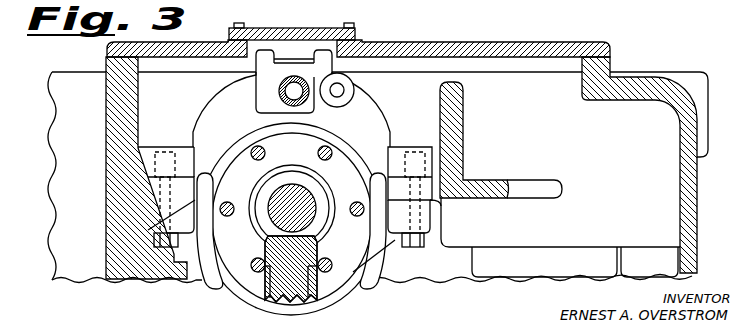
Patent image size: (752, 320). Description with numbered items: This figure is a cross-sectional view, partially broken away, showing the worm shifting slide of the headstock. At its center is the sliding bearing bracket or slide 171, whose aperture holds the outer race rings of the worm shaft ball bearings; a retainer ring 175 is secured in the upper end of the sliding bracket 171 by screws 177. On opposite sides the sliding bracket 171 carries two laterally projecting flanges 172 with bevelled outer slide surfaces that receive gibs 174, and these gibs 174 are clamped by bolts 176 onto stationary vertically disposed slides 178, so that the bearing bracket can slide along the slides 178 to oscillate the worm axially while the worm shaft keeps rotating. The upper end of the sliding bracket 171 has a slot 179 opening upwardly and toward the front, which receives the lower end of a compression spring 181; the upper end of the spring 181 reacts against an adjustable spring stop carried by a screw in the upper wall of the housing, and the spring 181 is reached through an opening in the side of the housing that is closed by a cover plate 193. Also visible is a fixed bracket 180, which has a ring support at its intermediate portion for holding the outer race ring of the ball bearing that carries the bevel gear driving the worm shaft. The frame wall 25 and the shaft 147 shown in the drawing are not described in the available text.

The frame side walls 25 is at (105, 238).
The eccentric shaft 147 is at (262, 224).
The sliding bracket 171 is at (212, 103).
The laterally projecting flanges 172 is at (192, 147).
The gibs 174 is at (145, 163).
The retainer ring 175 is at (337, 254).
The bolts 176 is at (152, 202).
The screws 177 is at (267, 148).
The stationary vertically disposed slides 178 is at (460, 178).
The slot 179 is at (300, 66).
The fixed bracket 180 is at (380, 251).
The compression spring 181 is at (286, 77).
The cover plate 193 is at (356, 34).